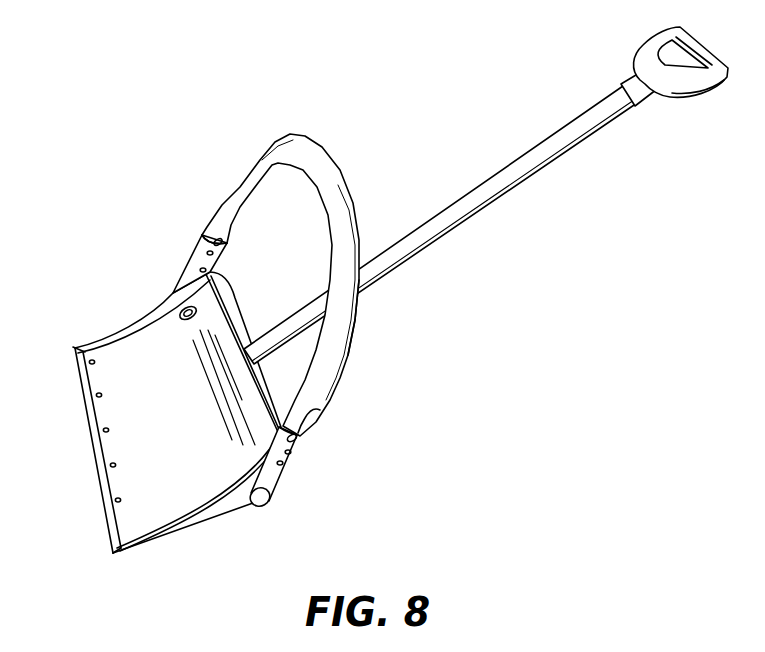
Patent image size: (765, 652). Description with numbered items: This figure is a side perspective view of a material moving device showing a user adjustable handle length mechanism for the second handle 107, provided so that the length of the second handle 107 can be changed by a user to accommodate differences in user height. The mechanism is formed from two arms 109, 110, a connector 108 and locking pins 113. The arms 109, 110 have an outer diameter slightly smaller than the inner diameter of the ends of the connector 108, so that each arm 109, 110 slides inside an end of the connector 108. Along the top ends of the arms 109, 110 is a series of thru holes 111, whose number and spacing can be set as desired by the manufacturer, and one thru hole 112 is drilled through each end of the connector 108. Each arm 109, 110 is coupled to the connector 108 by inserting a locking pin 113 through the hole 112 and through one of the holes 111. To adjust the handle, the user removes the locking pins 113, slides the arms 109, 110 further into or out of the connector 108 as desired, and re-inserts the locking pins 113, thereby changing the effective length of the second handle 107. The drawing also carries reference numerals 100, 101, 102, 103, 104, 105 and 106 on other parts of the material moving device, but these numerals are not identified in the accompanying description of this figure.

The snow shovel assembly 100 is at (170, 115).
The scoop blade 101 is at (98, 382).
The side rim 102 is at (96, 434).
The handle shaft 103 is at (572, 120).
The bottom edge 104 is at (194, 525).
The top rim 105 is at (104, 338).
The rivet holes 106 is at (118, 497).
The second handle 107 is at (350, 178).
The connector 108 is at (355, 322).
The arm 109 is at (275, 478).
The arm 110 is at (181, 278).
The thru holes 111 is at (297, 450).
The thru hole 112 is at (321, 411).
The locking pins 113 is at (298, 438).